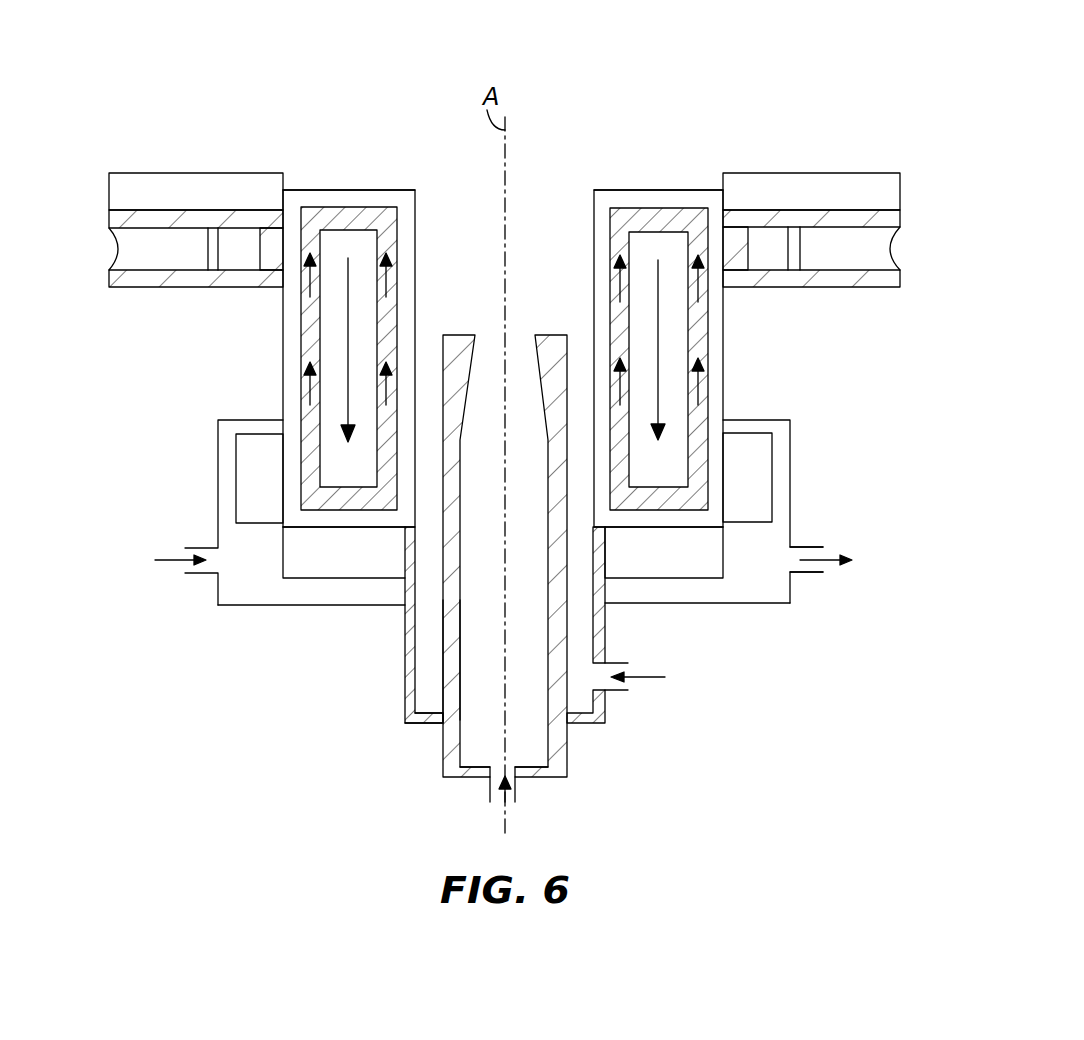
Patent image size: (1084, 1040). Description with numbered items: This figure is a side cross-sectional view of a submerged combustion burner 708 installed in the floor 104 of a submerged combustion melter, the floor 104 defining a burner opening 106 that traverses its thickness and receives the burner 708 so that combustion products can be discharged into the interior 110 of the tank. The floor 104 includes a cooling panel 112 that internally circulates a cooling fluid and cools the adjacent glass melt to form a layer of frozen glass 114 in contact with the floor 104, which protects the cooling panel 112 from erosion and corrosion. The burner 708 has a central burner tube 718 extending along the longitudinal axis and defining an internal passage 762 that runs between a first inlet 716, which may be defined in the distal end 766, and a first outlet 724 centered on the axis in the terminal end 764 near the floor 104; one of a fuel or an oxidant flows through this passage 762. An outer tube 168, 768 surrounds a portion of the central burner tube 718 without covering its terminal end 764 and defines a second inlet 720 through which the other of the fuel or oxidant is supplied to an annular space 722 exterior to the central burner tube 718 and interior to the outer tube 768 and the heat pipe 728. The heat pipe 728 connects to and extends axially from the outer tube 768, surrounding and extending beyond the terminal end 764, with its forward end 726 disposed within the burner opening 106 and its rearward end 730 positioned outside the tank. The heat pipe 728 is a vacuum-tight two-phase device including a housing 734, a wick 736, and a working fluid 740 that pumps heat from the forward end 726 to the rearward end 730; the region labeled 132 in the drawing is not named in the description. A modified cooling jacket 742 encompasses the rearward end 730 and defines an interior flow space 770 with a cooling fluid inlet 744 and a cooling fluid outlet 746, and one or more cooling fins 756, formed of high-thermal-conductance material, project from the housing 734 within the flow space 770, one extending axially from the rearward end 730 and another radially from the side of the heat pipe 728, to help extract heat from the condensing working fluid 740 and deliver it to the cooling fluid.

The interior 110 is at (498, 24).
The nozzle passage 132 is at (570, 249).
The floor 104 is at (98, 243).
The burner opening 106 is at (720, 190).
The cooling panel 112 is at (120, 276).
The layer of frozen glass 114 is at (190, 192).
The outer tube 168 is at (598, 620).
The submerged combustion burner 708 is at (624, 723).
The first inlet 716 is at (498, 781).
The central burner tube 718 is at (440, 660).
The second inlet 720 is at (613, 667).
The annular space 722 is at (406, 683).
The first outlet 724 is at (533, 336).
The forward end 726 is at (360, 190).
The heat pipe 728 is at (304, 178).
The rearward end 730 is at (330, 528).
The housing 734 is at (300, 378).
The wick 736 is at (313, 422).
The working fluid 740 is at (307, 293).
The cooling jacket 742 is at (802, 451).
The cooling fluid inlet 744 is at (197, 548).
The cooling fluid outlet 746 is at (805, 547).
The cooling fin 756 is at (303, 555).
The internal passage 762 is at (488, 776).
The terminal end 764 is at (457, 335).
The distal end 766 is at (531, 779).
The outer tube 768 is at (405, 707).
The interior flow space 770 is at (353, 592).